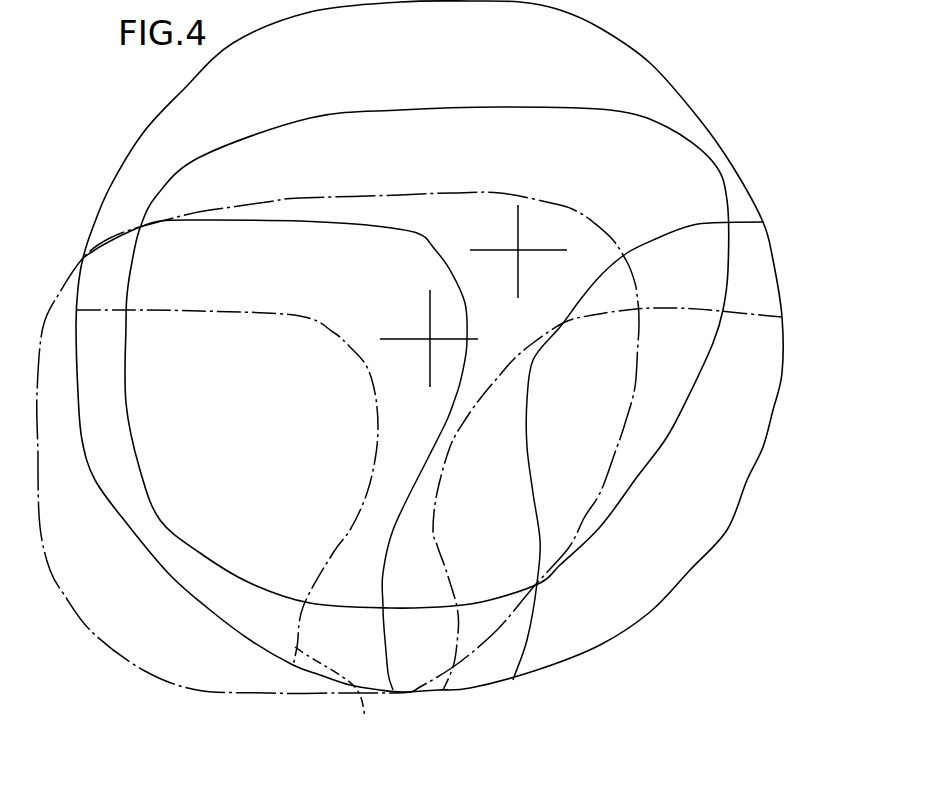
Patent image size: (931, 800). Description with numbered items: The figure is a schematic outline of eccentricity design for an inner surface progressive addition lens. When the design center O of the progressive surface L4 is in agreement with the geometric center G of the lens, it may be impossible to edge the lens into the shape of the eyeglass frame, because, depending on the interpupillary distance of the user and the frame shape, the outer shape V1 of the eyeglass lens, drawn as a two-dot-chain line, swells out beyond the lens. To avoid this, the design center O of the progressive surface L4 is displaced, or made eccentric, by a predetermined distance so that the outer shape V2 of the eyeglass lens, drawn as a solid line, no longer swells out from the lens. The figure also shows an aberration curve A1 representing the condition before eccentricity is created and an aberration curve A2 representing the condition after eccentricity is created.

The progressive surface L4 is at (643, 67).
The outer shape of the eyeglass lens after eccentricity V2 is at (713, 162).
The outer shape of the eyeglass lens before eccentricity V1 is at (197, 690).
The design center O is at (519, 253).
The geometric center G is at (428, 341).
The aberration curve after eccentricity A2 is at (385, 647).
The aberration curve before eccentricity A1 is at (413, 693).